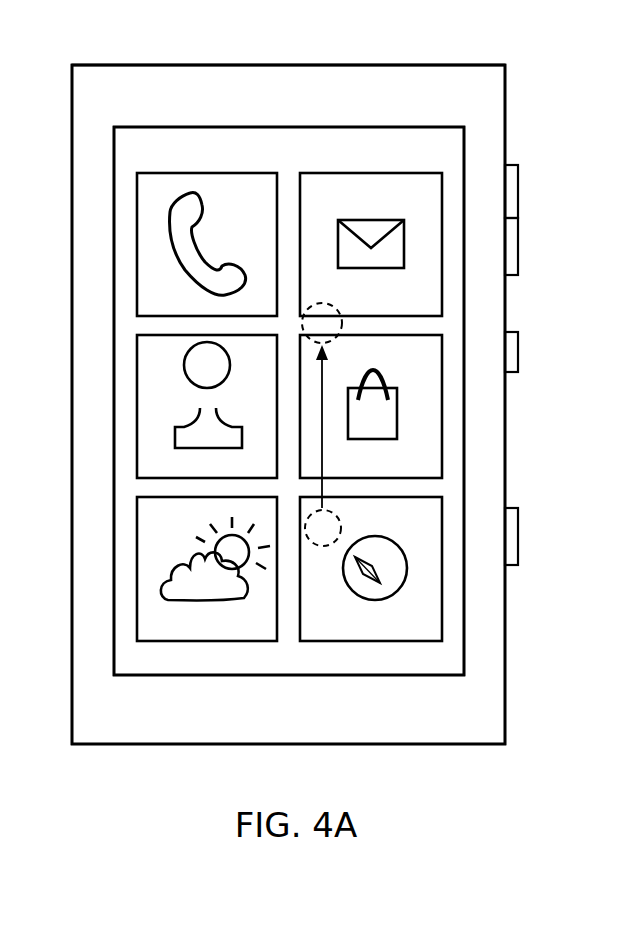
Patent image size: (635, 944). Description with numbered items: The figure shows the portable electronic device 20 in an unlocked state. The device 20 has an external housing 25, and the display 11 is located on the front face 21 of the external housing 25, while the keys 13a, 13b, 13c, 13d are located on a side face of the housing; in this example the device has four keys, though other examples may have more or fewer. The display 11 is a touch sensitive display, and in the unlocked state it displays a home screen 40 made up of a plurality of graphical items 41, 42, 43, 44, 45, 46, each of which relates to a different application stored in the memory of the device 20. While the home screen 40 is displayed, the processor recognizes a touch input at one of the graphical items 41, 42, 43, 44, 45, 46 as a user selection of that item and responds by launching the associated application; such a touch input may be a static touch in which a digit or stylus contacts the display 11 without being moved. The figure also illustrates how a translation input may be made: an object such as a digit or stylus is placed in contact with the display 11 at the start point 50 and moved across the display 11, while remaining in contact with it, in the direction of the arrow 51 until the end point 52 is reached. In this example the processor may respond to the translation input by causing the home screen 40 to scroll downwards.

The device 20 is at (150, 758).
The front face 21 is at (82, 115).
The external housing 25 is at (138, 65).
The display 11 is at (114, 388).
The home screen 40 is at (366, 151).
The graphical item 41 is at (224, 173).
The graphical item 42 is at (427, 173).
The graphical item 43 is at (138, 358).
The graphical item 44 is at (443, 352).
The graphical item 45 is at (138, 575).
The graphical item 46 is at (443, 512).
The key 13a is at (518, 542).
The key 13b is at (518, 350).
The key 13c is at (518, 248).
The key 13d is at (518, 195).
The start point 50 is at (327, 547).
The arrow 51 is at (322, 470).
The end point 52 is at (337, 312).